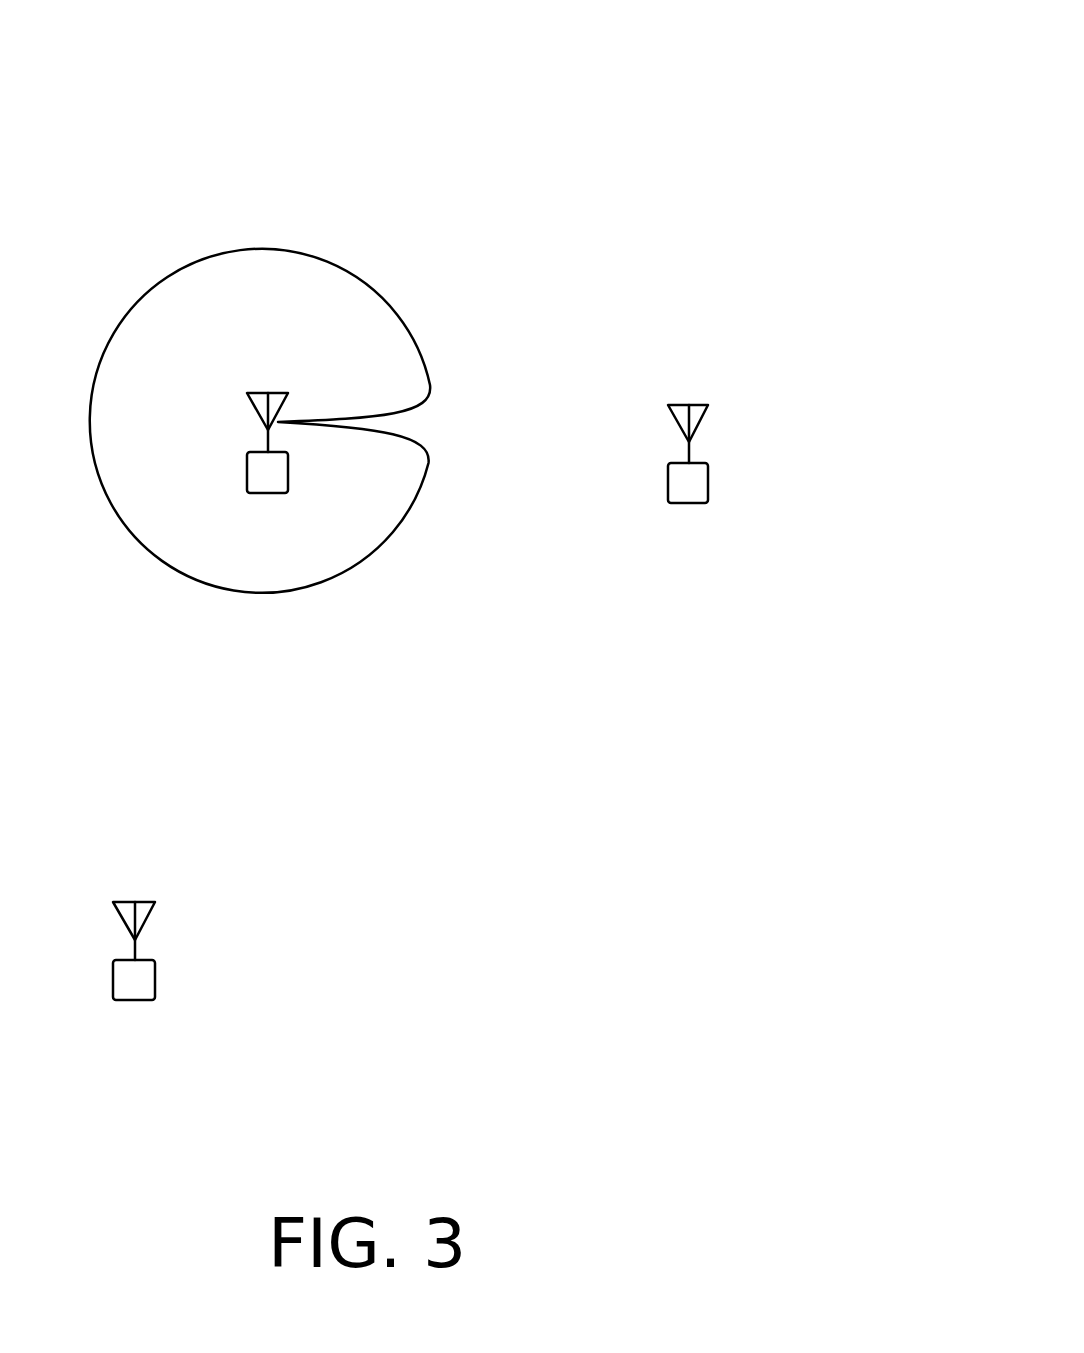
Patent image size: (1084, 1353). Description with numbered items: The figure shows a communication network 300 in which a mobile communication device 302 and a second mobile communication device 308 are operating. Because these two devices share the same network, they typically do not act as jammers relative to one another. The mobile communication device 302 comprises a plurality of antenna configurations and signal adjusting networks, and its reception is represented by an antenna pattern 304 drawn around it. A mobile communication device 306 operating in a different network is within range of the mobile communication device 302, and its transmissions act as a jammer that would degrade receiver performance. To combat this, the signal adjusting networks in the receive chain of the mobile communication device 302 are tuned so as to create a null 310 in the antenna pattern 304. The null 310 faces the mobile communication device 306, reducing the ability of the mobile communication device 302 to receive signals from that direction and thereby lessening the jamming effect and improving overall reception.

The communication network 300 is at (603, 105).
The mobile communication device 302 is at (260, 493).
The antenna pattern 304 is at (247, 247).
The mobile communication device 306 is at (708, 472).
The mobile communication device 308 is at (155, 962).
The null 310 is at (433, 412).